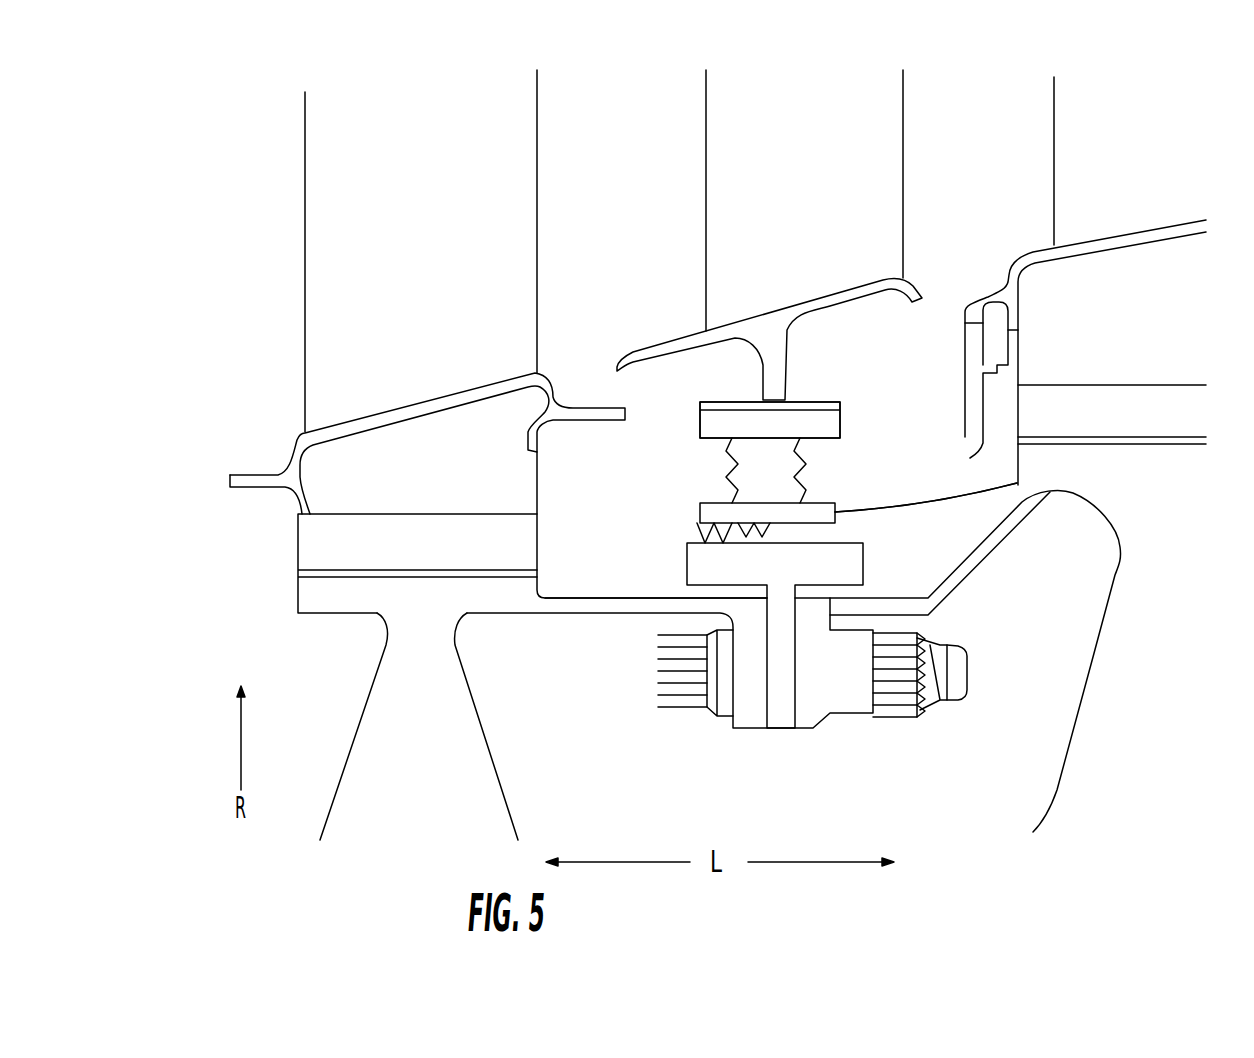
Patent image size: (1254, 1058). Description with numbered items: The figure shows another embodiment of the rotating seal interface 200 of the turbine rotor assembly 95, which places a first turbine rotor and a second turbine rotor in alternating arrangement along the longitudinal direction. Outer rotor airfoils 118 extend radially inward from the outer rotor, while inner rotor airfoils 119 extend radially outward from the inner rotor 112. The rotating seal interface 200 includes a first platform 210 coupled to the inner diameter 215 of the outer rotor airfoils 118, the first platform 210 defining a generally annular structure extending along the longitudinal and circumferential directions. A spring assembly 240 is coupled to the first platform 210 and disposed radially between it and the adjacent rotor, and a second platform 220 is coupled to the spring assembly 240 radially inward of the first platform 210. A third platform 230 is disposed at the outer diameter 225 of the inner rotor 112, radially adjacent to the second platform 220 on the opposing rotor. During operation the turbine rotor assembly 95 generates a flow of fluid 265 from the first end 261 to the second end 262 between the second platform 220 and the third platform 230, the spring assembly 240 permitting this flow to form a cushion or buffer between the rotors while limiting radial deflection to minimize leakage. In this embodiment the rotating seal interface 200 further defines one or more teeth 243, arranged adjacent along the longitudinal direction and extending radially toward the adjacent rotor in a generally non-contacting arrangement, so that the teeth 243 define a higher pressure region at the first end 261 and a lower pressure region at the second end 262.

The turbine rotor assembly 95 is at (772, 57).
The inner rotor 112 is at (578, 605).
The outer rotor airfoils 118 is at (748, 270).
The inner rotor airfoils 119 is at (505, 245).
The rotating seal interface 200 is at (818, 386).
The first platform 210 is at (826, 425).
The inner diameter of the plurality of outer rotor airfoils 215 is at (922, 324).
The second platform 220 is at (1017, 483).
The outer diameter of the inner rotor 225 is at (592, 593).
The third platform 230 is at (853, 555).
The spring assembly 240 is at (803, 470).
The teeth 243 is at (700, 523).
The first end 261 is at (600, 498).
The second end 262 is at (921, 494).
The flow of fluid 265 is at (676, 534).